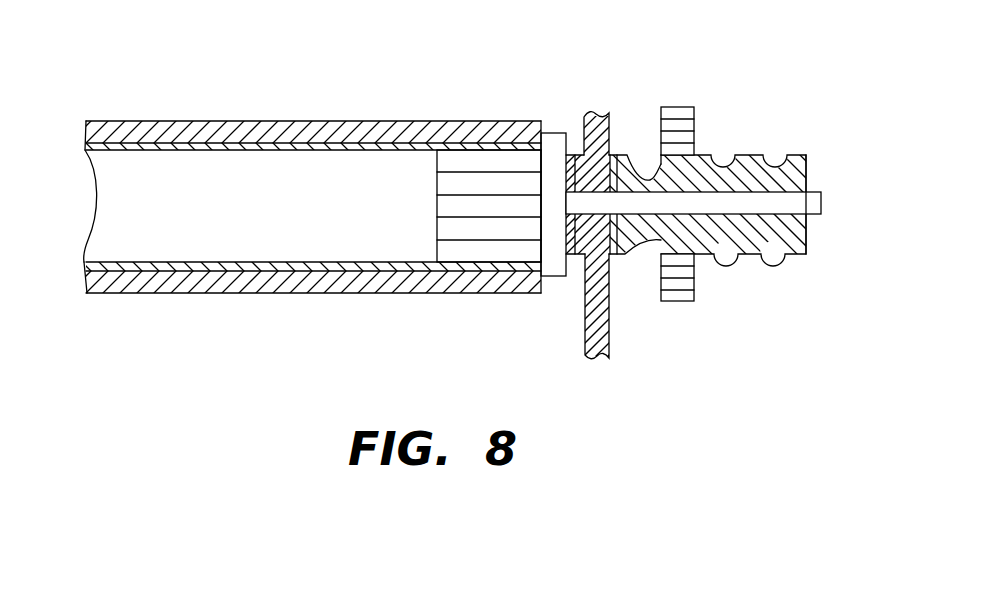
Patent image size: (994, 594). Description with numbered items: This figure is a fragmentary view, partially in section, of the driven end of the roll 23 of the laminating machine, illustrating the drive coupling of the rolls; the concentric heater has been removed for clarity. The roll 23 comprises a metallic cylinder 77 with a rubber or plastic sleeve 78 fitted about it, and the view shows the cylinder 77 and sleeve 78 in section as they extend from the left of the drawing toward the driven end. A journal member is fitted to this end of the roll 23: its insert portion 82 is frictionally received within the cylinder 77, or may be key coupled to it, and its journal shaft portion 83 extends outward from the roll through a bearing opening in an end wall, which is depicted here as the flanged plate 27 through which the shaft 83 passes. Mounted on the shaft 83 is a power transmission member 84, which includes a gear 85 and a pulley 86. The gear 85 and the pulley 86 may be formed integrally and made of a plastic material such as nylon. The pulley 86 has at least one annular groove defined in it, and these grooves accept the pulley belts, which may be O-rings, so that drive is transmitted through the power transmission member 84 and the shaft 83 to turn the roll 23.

The roll 23 is at (335, 203).
The flange 27 is at (592, 112).
The metallic cylinder 77 is at (177, 148).
The sleeve 78 is at (177, 293).
The insert portion 82 is at (475, 252).
The journal shaft portion 83 is at (651, 198).
The power transmission member 84 is at (630, 195).
The gear 85 is at (685, 115).
The pulley 86 is at (806, 170).